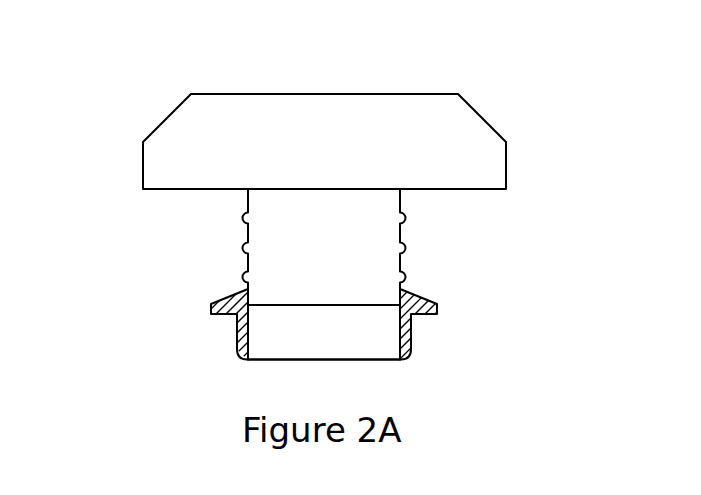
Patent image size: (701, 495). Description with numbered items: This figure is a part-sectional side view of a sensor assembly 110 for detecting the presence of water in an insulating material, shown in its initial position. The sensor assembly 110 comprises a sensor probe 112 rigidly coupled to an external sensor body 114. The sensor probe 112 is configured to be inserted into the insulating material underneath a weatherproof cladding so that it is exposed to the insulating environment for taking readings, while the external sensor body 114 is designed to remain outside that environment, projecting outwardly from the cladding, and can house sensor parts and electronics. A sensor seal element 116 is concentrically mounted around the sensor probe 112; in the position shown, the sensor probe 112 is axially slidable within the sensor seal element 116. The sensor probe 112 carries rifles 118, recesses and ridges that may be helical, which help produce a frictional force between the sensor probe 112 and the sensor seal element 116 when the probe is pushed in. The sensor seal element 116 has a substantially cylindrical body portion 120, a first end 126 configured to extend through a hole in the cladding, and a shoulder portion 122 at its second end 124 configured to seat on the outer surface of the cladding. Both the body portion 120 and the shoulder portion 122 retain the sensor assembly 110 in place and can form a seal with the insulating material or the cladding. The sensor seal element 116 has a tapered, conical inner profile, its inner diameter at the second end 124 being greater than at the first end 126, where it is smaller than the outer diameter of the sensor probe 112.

The sensor assembly 110 is at (110, 105).
The sensor probe 112 is at (254, 249).
The external sensor body 114 is at (465, 127).
The sensor seal element 116 is at (238, 321).
The rifles 118 is at (438, 252).
The body portion 120 is at (407, 347).
The shoulder portion 122 is at (438, 313).
The second end 124 is at (230, 300).
The first end 126 is at (281, 359).